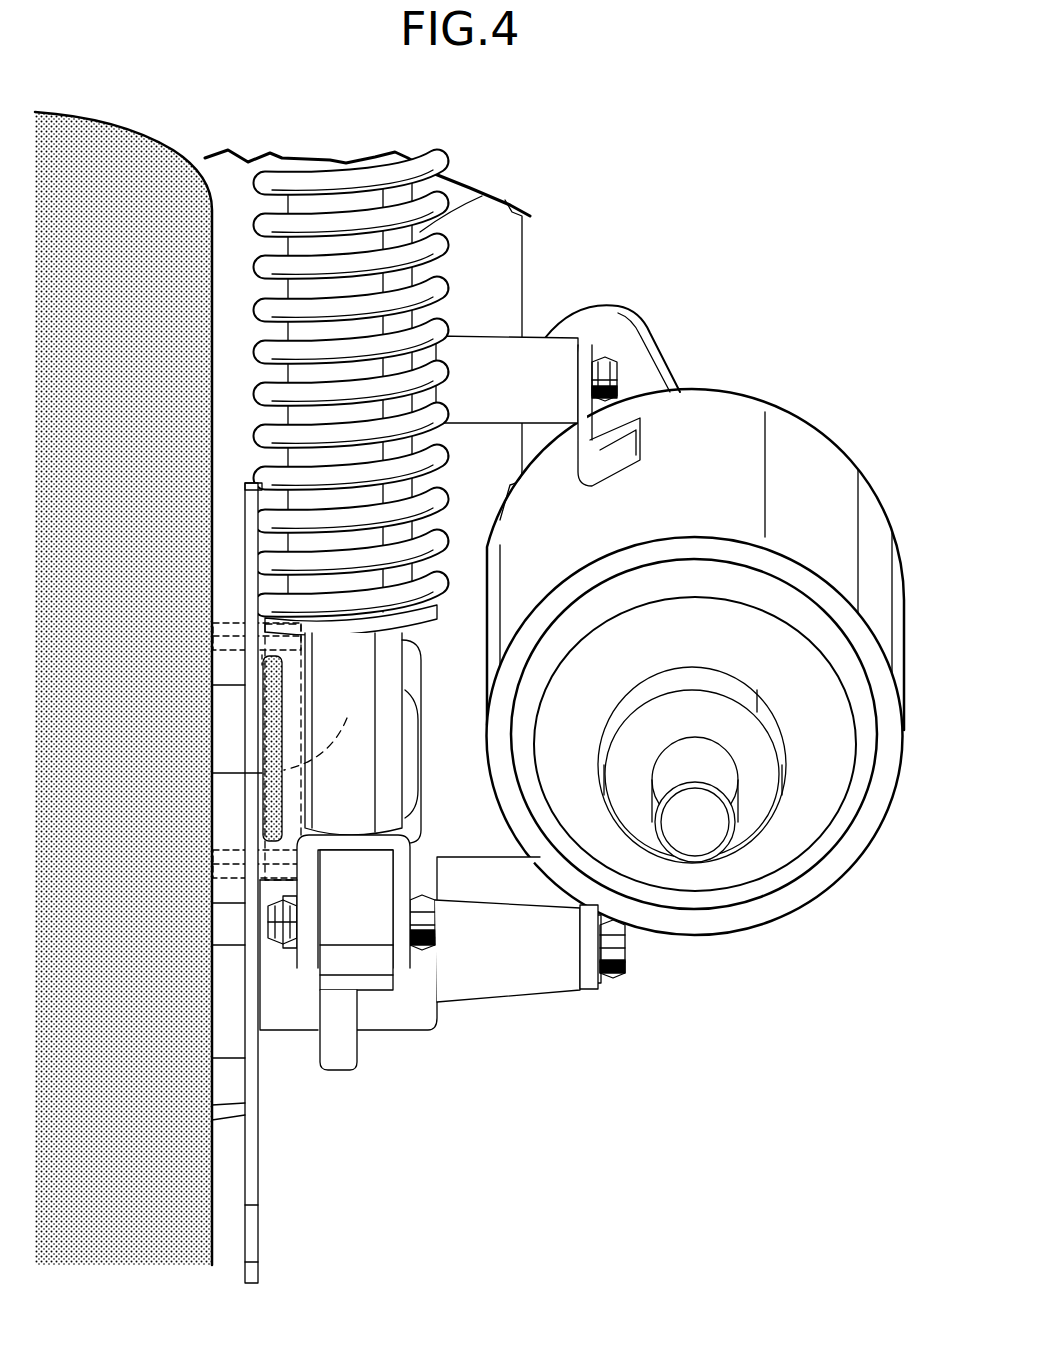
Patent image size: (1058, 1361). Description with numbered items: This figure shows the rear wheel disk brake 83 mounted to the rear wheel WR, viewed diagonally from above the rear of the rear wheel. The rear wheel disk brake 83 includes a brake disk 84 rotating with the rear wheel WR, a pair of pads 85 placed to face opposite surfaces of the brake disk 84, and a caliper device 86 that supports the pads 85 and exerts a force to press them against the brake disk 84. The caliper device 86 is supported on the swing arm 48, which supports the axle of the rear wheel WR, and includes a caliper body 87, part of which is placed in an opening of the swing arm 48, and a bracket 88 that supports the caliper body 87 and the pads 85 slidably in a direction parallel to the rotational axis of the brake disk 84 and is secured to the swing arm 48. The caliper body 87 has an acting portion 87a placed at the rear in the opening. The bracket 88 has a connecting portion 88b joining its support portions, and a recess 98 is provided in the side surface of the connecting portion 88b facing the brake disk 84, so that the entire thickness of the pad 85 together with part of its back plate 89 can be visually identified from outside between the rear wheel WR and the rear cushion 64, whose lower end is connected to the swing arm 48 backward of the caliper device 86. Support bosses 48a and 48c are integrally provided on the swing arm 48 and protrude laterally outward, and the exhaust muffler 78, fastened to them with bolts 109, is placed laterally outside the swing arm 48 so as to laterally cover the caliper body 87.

The rear wheel WR is at (92, 142).
The rear cushion 64 is at (430, 232).
The exhaust muffler 78 is at (738, 416).
The bolt 109 is at (612, 382).
The support boss 48a is at (545, 345).
The caliper body 87 is at (440, 672).
The acting portion 87a is at (416, 778).
The back plate 89 is at (178, 604).
The recess 98 is at (266, 700).
The connecting portion 88b is at (275, 728).
The pad 85 is at (262, 628).
The bracket 88 is at (258, 905).
The swing arm 48 is at (395, 1015).
The support boss 48c is at (500, 992).
The caliper device 86 is at (290, 1036).
The brake disk 84 is at (256, 1148).
The rear wheel disk brake 83 is at (264, 1245).